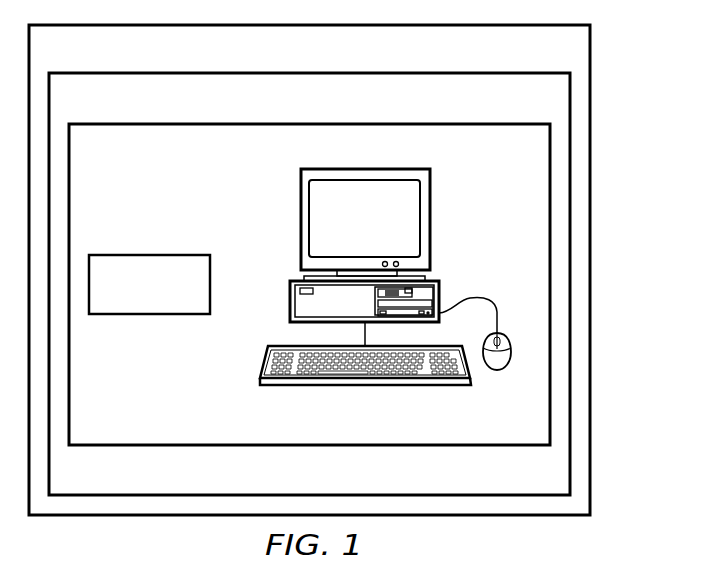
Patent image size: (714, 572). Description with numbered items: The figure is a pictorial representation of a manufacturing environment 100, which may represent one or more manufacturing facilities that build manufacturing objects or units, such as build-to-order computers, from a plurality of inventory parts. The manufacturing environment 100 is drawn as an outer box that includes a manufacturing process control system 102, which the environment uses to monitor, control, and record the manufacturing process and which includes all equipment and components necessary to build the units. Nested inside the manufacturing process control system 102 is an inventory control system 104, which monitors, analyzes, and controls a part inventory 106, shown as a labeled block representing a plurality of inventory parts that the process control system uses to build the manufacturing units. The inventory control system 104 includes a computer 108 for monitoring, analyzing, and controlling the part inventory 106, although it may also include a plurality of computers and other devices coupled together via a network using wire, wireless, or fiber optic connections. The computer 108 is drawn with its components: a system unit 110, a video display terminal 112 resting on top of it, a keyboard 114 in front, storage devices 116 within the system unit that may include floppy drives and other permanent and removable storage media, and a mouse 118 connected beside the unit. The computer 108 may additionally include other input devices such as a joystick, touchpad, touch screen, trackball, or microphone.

The manufacturing environment 100 is at (598, 270).
The manufacturing process control system 102 is at (329, 482).
The inventory control system 104 is at (168, 219).
The part inventory 106 is at (150, 315).
The computer 108 is at (470, 389).
The system unit 110 is at (290, 300).
The video display terminal 112 is at (432, 215).
The keyboard 114 is at (266, 362).
The storage devices 116 is at (416, 293).
The mouse 118 is at (497, 371).